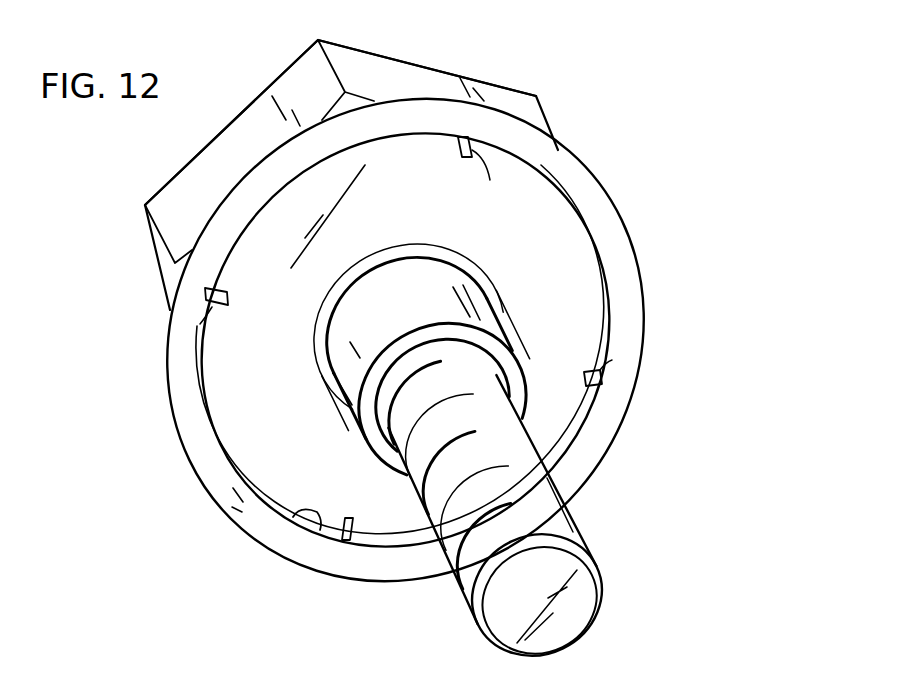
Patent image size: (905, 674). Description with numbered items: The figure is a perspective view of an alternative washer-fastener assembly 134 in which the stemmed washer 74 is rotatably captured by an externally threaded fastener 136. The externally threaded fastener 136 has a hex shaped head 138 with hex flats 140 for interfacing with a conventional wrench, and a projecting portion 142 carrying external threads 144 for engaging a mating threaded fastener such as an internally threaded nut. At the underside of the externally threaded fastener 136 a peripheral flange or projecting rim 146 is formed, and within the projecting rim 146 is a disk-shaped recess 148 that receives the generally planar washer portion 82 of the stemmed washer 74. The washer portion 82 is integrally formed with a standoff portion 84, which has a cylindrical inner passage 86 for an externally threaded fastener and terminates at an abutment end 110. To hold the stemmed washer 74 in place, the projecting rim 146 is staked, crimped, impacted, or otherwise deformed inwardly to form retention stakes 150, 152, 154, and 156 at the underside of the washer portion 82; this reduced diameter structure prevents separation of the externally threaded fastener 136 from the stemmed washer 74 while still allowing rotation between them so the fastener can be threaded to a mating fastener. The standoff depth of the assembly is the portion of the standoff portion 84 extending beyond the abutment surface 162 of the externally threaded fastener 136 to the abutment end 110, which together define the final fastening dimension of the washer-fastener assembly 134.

The washer-fastener assembly 134 is at (662, 104).
The externally threaded fastener 136 is at (486, 78).
The hex shaped head 138 is at (373, 50).
The hex flats 140 is at (292, 88).
The stemmed washer 74 is at (574, 251).
The washer portion 82 is at (584, 290).
The standoff portion 84 is at (450, 290).
The cylindrical inner passage 86 is at (463, 340).
The abutment end 110 is at (377, 445).
The projecting portion 142 is at (510, 408).
The external threads 144 is at (523, 455).
The projecting rim 146 is at (167, 368).
The disk-shaped recess 148 is at (300, 513).
The retention stake 150 is at (208, 315).
The retention stake 152 is at (480, 150).
The retention stake 154 is at (603, 375).
The retention stake 156 is at (348, 537).
The abutment surface 162 is at (203, 452).